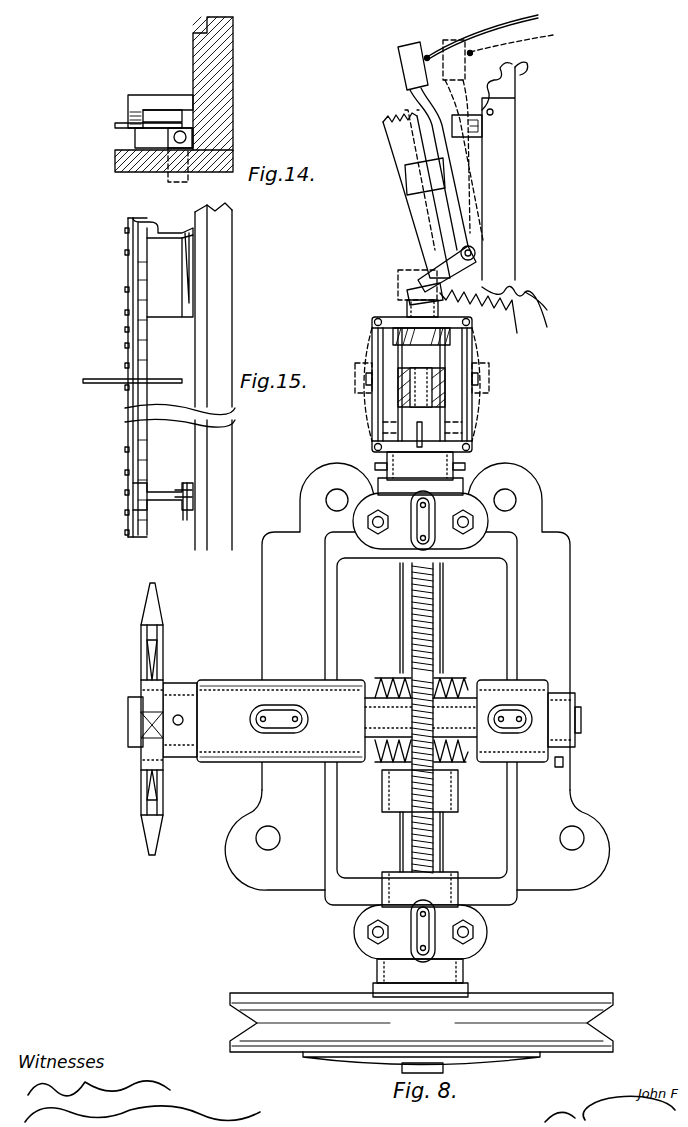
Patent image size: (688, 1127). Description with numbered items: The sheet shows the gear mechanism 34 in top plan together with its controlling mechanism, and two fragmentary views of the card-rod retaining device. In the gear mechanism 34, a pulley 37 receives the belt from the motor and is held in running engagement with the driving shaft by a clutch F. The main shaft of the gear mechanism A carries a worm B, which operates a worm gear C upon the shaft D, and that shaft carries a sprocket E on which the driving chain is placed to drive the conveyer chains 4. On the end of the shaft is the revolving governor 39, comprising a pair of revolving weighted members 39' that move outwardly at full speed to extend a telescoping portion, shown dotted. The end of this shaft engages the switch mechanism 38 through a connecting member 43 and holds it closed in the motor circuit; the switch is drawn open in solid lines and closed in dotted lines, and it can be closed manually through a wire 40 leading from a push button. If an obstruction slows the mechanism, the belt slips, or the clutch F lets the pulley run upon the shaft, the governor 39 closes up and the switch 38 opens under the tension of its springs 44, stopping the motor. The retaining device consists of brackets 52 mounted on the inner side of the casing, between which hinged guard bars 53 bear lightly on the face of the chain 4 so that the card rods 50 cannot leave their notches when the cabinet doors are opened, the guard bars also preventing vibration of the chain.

In FIG. 14, the conveyer chain 4 is at (130, 113).
In FIG. 15, the conveyer chain 4 is at (130, 307).
In FIG. 14, the card rod 50 is at (115, 125).
In FIG. 15, the card rod 50 is at (110, 383).
In FIG. 14, the bracket 52 is at (180, 131).
In FIG. 15, the bracket 52 is at (187, 258).
In FIG. 14, the guard bar 53 is at (137, 140).
In FIG. 15, the guard bar 53 is at (133, 242).
In FIG. 8, the gear mechanism 34 is at (417, 730).
In FIG. 8, the pulley 37 is at (290, 993).
In FIG. 8, the switch mechanism 38 is at (418, 103).
In FIG. 8, the revolving governor 39 is at (410, 390).
In FIG. 8, the revolving weighted members 39' is at (425, 388).
In FIG. 8, the wire 40 is at (484, 37).
In FIG. 8, the link 43 is at (392, 313).
In FIG. 8, the spring 44 is at (490, 314).
In FIG. 8, the main shaft of the gear mechanism A is at (405, 612).
In FIG. 8, the worm B is at (392, 673).
In FIG. 8, the worm gear C is at (441, 673).
In FIG. 8, the shaft D is at (380, 712).
In FIG. 8, the sprocket E is at (158, 666).
In FIG. 8, the clutch F is at (480, 1062).